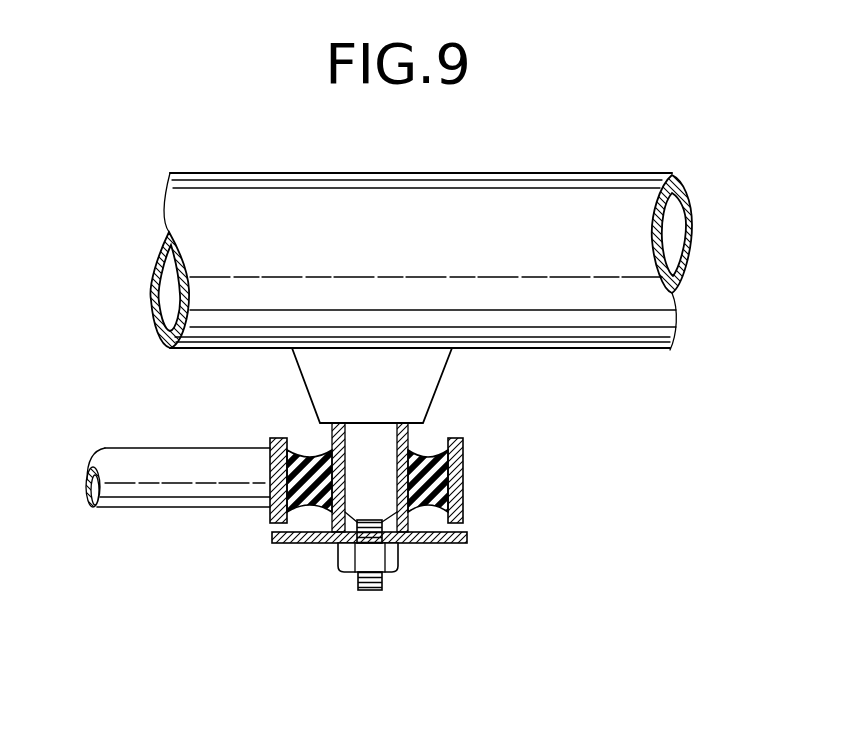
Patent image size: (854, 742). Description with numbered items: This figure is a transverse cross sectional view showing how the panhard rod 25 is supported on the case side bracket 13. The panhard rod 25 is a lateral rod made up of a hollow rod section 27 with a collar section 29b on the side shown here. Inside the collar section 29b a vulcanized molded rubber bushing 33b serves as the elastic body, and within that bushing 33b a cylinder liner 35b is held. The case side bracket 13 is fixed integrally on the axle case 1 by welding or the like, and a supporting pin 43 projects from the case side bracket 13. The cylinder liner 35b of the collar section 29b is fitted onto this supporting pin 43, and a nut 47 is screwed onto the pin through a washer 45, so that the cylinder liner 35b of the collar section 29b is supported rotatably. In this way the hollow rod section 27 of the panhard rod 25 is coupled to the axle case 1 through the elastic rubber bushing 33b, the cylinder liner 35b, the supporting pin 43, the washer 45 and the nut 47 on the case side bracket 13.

The axle case 1 is at (585, 196).
The case side bracket 13 is at (420, 390).
The panhard rod 25 is at (130, 448).
The hollow rod section 27 is at (143, 492).
The collar section 29b is at (465, 450).
The rubber bushing 33b is at (440, 497).
The cylinder liner 35b is at (402, 523).
The supporting pin 43 is at (373, 590).
The washer 45 is at (293, 543).
The nut 47 is at (342, 558).